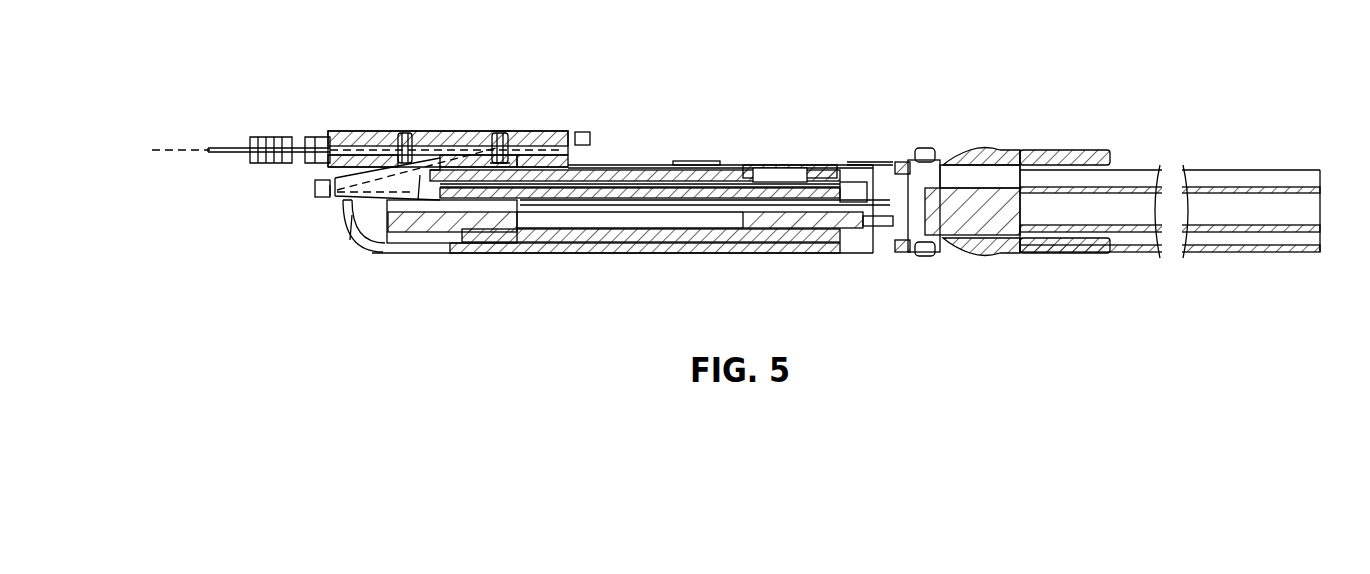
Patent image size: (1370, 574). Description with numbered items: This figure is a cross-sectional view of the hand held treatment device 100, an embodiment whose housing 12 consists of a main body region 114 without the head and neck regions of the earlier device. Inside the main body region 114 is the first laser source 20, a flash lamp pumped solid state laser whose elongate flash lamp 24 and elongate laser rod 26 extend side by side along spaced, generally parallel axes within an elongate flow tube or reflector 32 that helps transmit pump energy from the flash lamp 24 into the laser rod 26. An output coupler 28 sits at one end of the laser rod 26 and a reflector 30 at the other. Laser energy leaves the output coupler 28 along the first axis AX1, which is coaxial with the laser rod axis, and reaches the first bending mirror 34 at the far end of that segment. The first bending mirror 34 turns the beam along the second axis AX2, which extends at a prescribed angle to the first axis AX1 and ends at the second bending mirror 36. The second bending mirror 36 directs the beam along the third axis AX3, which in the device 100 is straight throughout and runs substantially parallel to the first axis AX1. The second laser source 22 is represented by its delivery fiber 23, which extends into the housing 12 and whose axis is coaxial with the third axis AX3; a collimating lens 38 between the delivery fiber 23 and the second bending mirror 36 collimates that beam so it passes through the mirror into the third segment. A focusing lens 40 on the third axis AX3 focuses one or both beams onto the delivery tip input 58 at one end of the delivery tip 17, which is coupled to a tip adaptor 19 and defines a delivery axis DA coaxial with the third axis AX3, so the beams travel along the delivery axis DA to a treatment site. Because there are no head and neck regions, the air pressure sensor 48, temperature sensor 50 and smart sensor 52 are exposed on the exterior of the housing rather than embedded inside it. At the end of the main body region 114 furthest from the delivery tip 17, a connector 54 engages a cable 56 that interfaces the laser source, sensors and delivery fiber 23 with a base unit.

The device 100 is at (913, 70).
The housing 12 is at (530, 245).
The first laser source 20 is at (598, 242).
The flash lamp 24 is at (668, 216).
The laser rod 26 is at (605, 170).
The output coupler 28 is at (437, 131).
The second laser source 22 is at (541, 128).
The delivery fiber 23 is at (555, 131).
The delivery tip 17 is at (217, 147).
The tip adaptor 19 is at (277, 137).
The delivery tip input 58 is at (330, 133).
The focusing lens 40 is at (399, 131).
The second bending mirror 36 is at (495, 131).
The collimating lens 38 is at (505, 131).
The smart sensor 52 is at (583, 131).
The temperature sensor 50 is at (678, 161).
The flow tube or reflector 32 is at (727, 162).
The main body region 114 is at (775, 167).
The reflector 30 is at (838, 162).
The air pressure sensor 48 is at (315, 188).
The first bending mirror 34 is at (327, 208).
The connector 54 is at (975, 255).
The cable 56 is at (1253, 252).
The delivery axis DA is at (172, 147).
The first axis AX1 is at (352, 215).
The second axis AX2 is at (420, 175).
The third axis AX3 is at (327, 163).